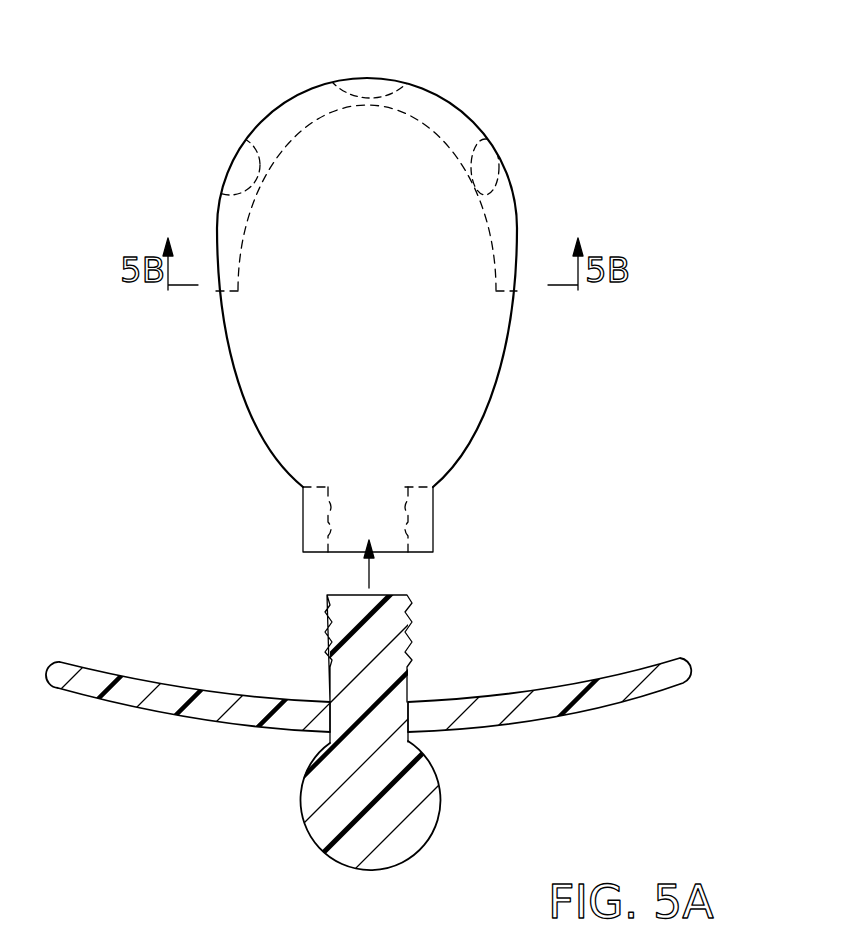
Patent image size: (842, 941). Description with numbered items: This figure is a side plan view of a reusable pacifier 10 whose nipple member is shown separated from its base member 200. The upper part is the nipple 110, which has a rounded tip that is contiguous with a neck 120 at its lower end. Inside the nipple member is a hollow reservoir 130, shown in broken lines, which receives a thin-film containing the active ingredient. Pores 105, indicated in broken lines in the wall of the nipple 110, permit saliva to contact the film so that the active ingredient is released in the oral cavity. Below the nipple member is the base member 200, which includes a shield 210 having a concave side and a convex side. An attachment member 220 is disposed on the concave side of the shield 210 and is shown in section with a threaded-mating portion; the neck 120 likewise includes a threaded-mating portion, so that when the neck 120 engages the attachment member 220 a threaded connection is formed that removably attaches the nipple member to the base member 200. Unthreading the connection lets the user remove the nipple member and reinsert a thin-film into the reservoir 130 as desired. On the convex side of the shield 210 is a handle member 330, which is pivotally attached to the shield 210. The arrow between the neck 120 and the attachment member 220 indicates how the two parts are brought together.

The pacifier 10 is at (226, 60).
The pores 105 is at (497, 147).
The nipple 110 is at (216, 306).
The neck 120 is at (434, 517).
The reservoir 130 is at (505, 268).
The base member 200 is at (731, 557).
The shield 210 is at (582, 675).
The attachment member 220 is at (328, 612).
The handle member 330 is at (438, 818).